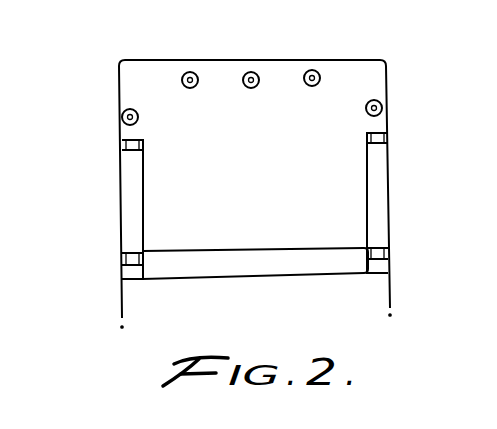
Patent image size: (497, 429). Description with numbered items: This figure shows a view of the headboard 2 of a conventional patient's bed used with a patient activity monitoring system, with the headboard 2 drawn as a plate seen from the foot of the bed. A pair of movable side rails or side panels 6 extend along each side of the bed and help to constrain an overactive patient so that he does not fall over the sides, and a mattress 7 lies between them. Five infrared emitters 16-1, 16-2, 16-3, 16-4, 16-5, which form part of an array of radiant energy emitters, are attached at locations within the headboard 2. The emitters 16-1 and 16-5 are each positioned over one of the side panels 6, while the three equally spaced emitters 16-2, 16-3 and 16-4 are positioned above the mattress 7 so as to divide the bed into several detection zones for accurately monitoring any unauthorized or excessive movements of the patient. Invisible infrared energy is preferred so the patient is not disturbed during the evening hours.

The headboard 2 is at (249, 184).
The side panels 6 is at (122, 212).
The mattress 7 is at (246, 262).
The infrared emitter 16-1 is at (122, 116).
The infrared emitter 16-2 is at (189, 72).
The infrared emitter 16-3 is at (253, 72).
The infrared emitter 16-4 is at (346, 40).
The infrared emitter 16-5 is at (383, 105).